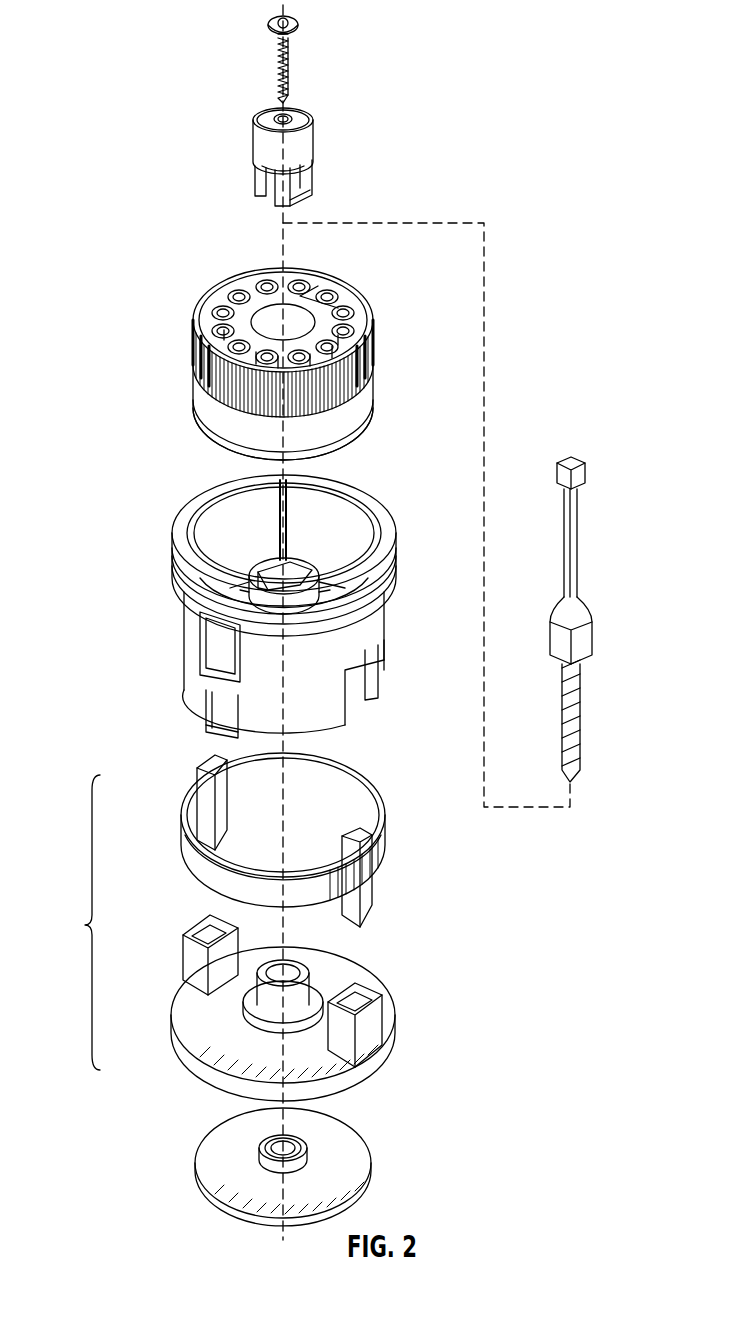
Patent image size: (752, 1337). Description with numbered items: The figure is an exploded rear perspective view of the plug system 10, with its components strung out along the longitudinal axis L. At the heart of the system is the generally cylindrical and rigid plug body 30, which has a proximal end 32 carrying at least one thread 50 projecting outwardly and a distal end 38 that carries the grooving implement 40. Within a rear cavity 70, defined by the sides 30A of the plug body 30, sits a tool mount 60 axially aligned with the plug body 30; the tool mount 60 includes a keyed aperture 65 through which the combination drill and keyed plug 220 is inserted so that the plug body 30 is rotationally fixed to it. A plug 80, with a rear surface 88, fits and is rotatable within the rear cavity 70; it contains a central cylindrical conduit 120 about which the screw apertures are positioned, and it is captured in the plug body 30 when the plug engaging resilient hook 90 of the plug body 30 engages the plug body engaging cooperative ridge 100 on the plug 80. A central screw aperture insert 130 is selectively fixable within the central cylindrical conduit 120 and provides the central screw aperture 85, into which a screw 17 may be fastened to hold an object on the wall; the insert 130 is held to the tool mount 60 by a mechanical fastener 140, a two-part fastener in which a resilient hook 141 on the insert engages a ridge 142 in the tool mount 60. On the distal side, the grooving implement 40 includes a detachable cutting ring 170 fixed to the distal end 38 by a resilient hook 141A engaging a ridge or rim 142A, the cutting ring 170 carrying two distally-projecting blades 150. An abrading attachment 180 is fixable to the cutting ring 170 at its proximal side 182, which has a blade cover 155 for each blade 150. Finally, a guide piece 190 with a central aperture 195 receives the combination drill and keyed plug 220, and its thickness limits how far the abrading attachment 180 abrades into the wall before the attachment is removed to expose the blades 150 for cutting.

The plug system 10 is at (142, 470).
The screw 17 is at (278, 62).
The plug body 30 is at (282, 602).
The sides of the plug body 30A is at (385, 640).
The proximal end 32 is at (190, 522).
The distal end 38 is at (342, 722).
The grooving implement 40 is at (70, 922).
The thread 50 is at (178, 565).
The tool mount 60 is at (295, 560).
The keyed aperture 65 is at (270, 572).
The rear cavity 70 is at (228, 532).
The plug 80 is at (277, 345).
The central screw aperture 85 is at (290, 118).
The rear surface 88 is at (352, 308).
The plug engaging resilient hook 90 is at (215, 668).
The plug body engaging cooperative ridge 100 is at (370, 418).
The central cylindrical conduit 120 is at (268, 312).
The central screw aperture insert 130 is at (314, 140).
The mechanical fastener 140 is at (338, 162).
The resilient hook 141 is at (288, 208).
The resilient hook 141A is at (206, 730).
The ridge 142 is at (312, 562).
The ridge or rim 142A is at (215, 878).
The distally-projecting blade 150 is at (218, 812).
The blade cover 155 is at (318, 990).
The cutting ring 170 is at (284, 839).
The abrading attachment 180 is at (309, 1008).
The proximal side 182 is at (200, 1038).
The guide piece 190 is at (292, 1167).
The central aperture 195 is at (230, 1150).
The combination drill and keyed plug 220 is at (580, 548).
The longitudinal axis L is at (285, 925).